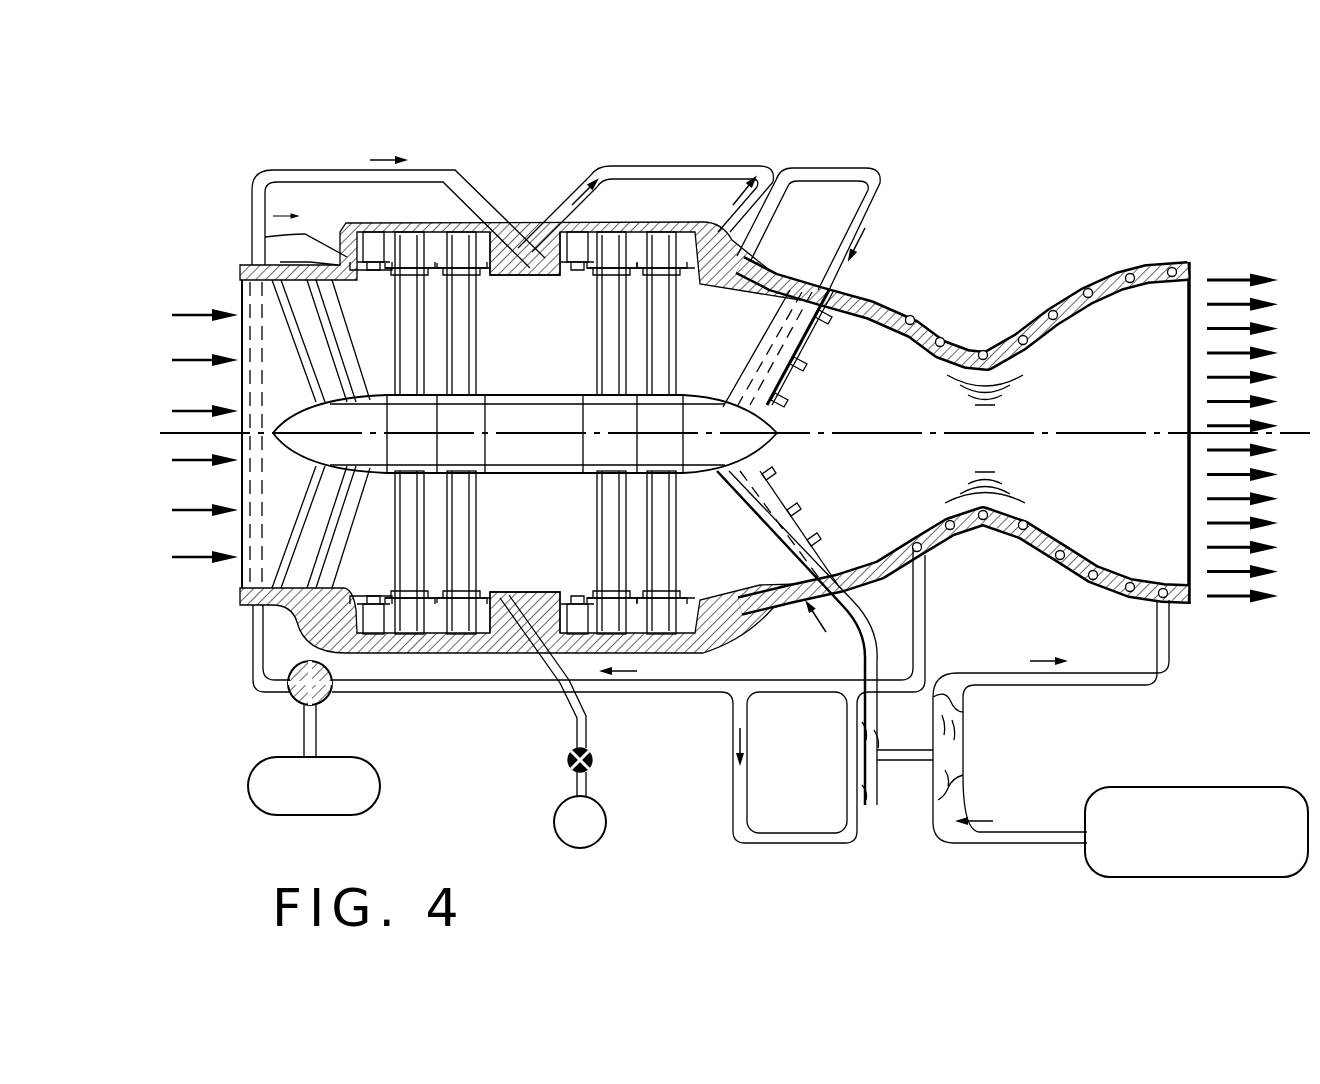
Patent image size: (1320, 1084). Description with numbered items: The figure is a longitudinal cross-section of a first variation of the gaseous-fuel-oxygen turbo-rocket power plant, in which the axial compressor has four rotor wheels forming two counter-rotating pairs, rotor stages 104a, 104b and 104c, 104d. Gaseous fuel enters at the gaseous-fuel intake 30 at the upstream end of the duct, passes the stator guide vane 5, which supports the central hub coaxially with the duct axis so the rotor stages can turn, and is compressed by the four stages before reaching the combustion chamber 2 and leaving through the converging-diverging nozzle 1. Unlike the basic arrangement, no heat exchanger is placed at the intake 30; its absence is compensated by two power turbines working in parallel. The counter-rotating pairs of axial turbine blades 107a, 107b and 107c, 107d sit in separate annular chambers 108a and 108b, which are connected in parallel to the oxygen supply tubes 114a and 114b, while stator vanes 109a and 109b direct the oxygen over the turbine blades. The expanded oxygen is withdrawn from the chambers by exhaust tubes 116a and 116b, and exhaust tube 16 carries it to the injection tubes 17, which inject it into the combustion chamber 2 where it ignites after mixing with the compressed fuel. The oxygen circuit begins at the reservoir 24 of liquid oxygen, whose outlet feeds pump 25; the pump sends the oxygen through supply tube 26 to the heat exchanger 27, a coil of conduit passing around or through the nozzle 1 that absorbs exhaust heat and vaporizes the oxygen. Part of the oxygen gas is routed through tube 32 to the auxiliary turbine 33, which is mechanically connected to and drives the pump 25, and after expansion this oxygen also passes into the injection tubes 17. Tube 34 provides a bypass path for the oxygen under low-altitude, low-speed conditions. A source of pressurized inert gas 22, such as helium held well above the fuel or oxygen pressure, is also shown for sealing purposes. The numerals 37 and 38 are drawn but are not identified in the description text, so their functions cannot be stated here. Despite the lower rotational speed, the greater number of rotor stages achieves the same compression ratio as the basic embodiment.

The converging-diverging nozzle 1 is at (1145, 300).
The combustion chamber 2 is at (890, 318).
The stator guide vane 5 is at (305, 532).
The exhaust tube 16 is at (872, 205).
The injection tubes 17 is at (790, 372).
The source of pressurized inert gas 22 is at (564, 835).
The reservoir 24 is at (1168, 841).
The pump 25 is at (567, 760).
The supply tube 26 is at (1168, 660).
The heat exchanger 27 is at (1018, 530).
The gaseous-fuel intake 30 is at (248, 300).
The tube 32 is at (740, 803).
The auxiliary turbine 33 is at (862, 752).
The tube 34 is at (253, 640).
The control valve 37 is at (305, 663).
The reservoir 38 is at (292, 799).
The rotor stage 104a is at (418, 328).
The rotor stage 104b is at (457, 320).
The rotor stage 104c is at (600, 365).
The rotor stage 104d is at (660, 328).
The axial turbine blades 107a is at (417, 232).
The axial turbine blades 107b is at (465, 232).
The axial turbine blades 107c is at (606, 232).
The axial turbine blades 107d is at (722, 230).
The annular chamber 108a is at (372, 232).
The annular chamber 108b is at (640, 238).
The stator vanes 109a is at (375, 264).
The stator vanes 109b is at (556, 218).
The oxygen supply tube 114a is at (312, 232).
The oxygen supply tube 114b is at (262, 170).
The exhaust tube 116a is at (760, 168).
The exhaust tube 116b is at (762, 205).